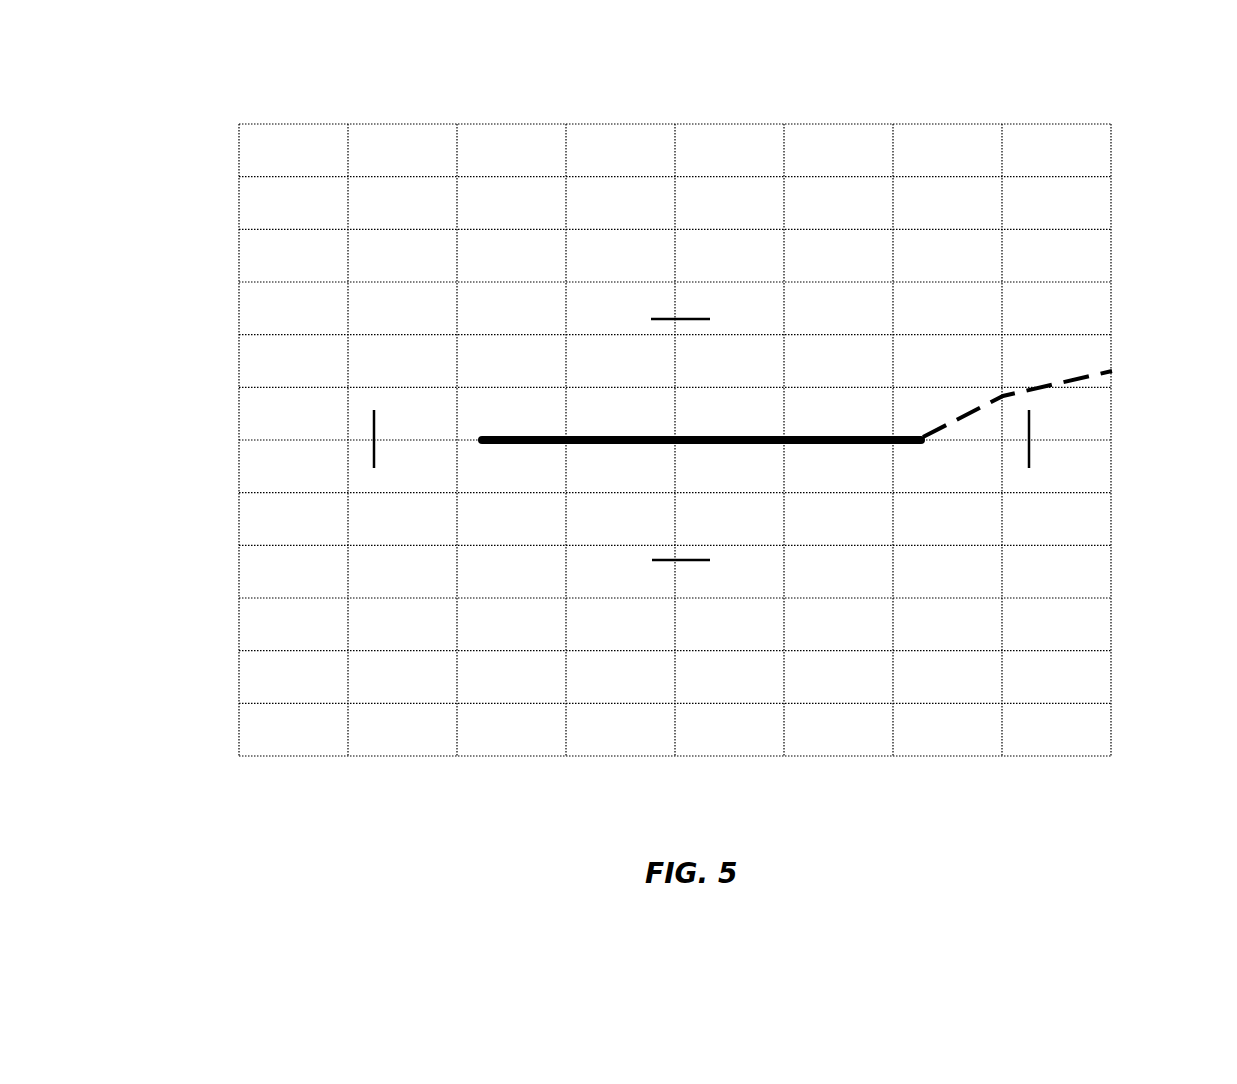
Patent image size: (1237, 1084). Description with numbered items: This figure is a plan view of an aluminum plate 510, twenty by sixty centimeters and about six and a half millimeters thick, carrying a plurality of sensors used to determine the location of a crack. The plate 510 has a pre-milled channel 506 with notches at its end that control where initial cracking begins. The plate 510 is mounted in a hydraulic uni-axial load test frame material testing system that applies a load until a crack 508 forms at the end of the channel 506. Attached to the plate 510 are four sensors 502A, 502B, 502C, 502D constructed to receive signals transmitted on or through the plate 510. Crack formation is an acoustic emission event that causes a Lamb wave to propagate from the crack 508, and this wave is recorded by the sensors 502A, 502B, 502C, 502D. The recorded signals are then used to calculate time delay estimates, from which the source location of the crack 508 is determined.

The plate 510 is at (1130, 138).
The pre-milled channel 506 is at (593, 430).
The crack 508 is at (1044, 374).
The sensor 502A is at (365, 431).
The sensor 502B is at (648, 307).
The sensor 502C is at (636, 560).
The sensor 502D is at (1029, 489).